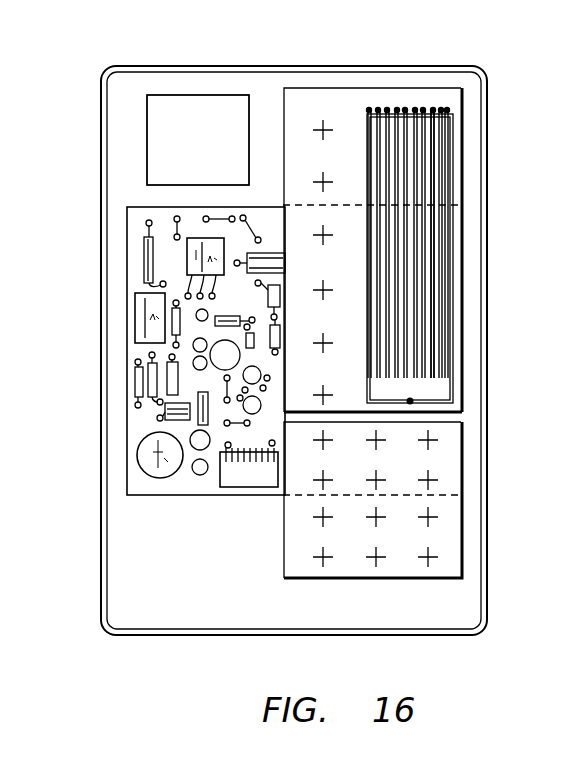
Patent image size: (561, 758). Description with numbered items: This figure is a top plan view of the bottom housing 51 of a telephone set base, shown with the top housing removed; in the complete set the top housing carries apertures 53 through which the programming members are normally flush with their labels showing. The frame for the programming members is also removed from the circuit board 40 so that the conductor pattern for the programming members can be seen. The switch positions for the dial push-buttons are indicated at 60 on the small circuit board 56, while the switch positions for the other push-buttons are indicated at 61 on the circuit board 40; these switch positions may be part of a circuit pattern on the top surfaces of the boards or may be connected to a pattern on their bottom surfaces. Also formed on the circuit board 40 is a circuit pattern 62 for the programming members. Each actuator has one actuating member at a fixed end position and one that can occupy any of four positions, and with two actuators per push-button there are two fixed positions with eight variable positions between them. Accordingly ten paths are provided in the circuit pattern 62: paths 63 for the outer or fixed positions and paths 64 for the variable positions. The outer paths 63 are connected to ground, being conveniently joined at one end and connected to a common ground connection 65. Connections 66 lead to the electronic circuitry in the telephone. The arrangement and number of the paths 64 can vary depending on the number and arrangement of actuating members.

The circuit board 40 is at (462, 328).
The bottom housing 51 is at (152, 636).
The apertures for the programming members 53 is at (136, 474).
The small circuit board 56 is at (445, 453).
The switch positions for the push-buttons 60 is at (433, 438).
The switch positions for the push-buttons 61 is at (320, 128).
The circuit pattern 62 is at (458, 288).
The paths for the outer or fixed positions 63 is at (367, 134).
The paths for the variable positions 64 is at (437, 137).
The common ground connection 65 is at (378, 106).
The connections to the electronic circuitry 66 is at (433, 106).